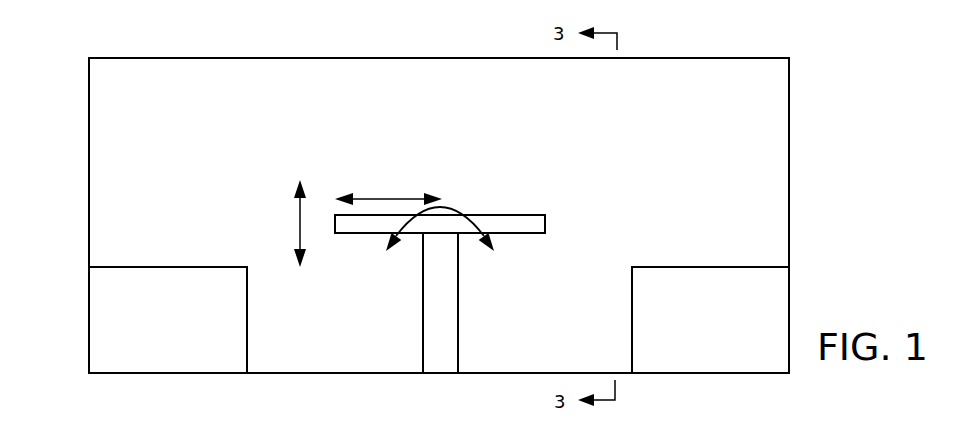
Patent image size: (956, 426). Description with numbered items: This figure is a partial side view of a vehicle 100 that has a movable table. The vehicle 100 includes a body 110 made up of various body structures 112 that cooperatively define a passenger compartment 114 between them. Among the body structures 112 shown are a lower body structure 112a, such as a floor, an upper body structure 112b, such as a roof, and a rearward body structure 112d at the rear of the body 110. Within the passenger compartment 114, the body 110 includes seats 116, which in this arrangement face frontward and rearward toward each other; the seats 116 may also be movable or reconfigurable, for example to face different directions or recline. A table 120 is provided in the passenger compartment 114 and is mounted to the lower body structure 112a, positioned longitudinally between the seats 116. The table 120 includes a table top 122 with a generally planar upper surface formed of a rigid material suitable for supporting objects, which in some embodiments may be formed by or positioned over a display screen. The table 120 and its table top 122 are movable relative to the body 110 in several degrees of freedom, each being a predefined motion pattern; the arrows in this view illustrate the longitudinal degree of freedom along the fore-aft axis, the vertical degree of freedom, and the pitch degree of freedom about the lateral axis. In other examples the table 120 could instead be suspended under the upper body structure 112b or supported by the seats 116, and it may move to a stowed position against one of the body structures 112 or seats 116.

The vehicle 100 is at (819, 65).
The body 110 is at (790, 204).
The body structures 112 is at (790, 263).
The lower body structure 112a is at (507, 373).
The upper body structure 112b is at (347, 58).
The rearward body structure 112d is at (89, 205).
The passenger compartment 114 is at (766, 151).
The seats 116 is at (439, 320).
The table 120 is at (557, 141).
The table top 122 is at (537, 229).